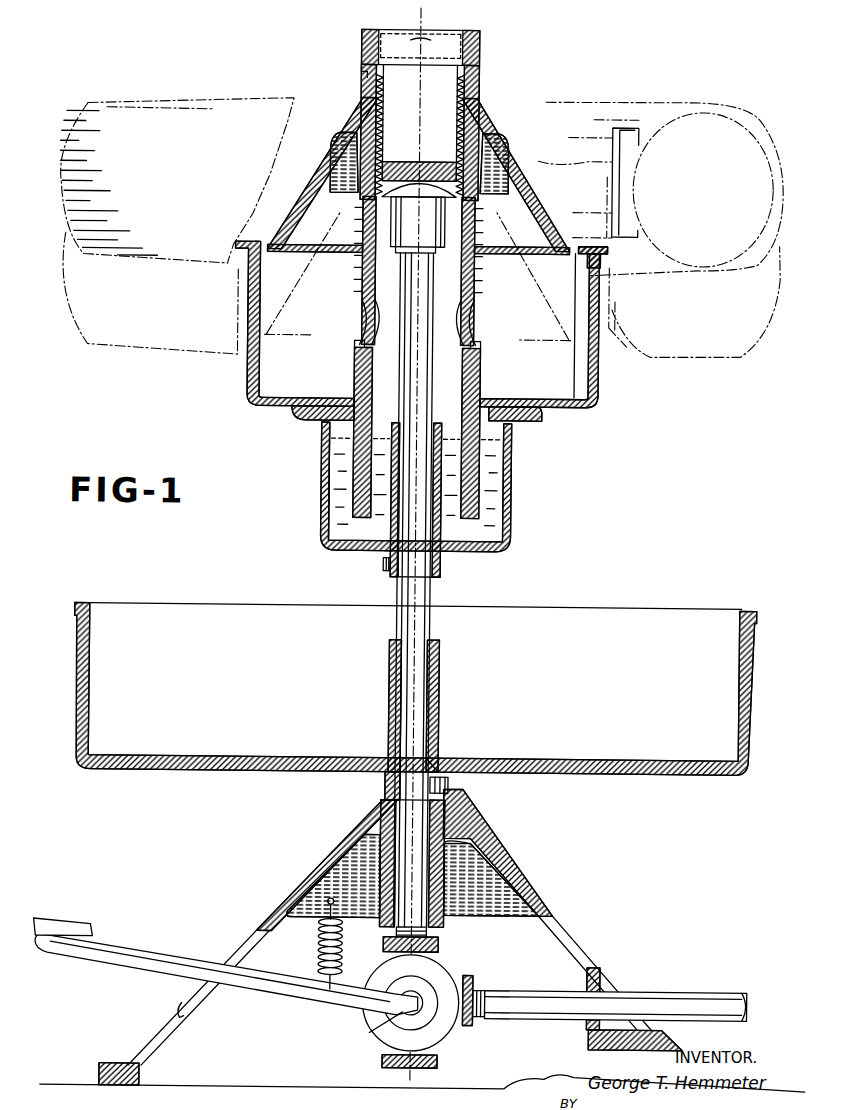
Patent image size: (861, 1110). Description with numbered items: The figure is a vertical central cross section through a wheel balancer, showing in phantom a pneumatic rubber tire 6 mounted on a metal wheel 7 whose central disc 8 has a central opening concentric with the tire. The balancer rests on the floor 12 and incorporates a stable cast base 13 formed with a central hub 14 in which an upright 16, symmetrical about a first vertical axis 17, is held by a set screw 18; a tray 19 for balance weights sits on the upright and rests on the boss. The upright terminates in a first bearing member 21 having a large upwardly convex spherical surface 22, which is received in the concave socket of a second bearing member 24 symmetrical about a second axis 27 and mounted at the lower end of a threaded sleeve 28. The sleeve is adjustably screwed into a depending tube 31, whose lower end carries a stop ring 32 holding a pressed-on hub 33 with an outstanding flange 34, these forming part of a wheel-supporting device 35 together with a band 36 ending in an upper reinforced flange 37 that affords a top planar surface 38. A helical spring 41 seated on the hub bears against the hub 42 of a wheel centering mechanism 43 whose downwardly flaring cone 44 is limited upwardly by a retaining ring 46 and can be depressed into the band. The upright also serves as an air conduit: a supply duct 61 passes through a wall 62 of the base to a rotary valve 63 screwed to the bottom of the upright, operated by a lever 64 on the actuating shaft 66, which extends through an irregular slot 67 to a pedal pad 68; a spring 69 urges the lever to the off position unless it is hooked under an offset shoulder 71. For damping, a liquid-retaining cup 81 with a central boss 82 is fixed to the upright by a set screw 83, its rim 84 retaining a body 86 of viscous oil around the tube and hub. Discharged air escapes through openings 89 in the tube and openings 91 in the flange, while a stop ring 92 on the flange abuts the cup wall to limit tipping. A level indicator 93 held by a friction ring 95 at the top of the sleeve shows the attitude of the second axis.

The pneumatic rubber tire 6 is at (721, 100).
The metal wheel 7 is at (586, 158).
The central disc 8 is at (513, 140).
The floor 12 is at (84, 1087).
The base 13 is at (308, 884).
The central hub 14 is at (396, 792).
The upright 16 is at (438, 601).
The first vertical axis 17 is at (446, 758).
The set screw 18 is at (457, 789).
The tray 19 is at (631, 766).
The first bearing member 21 is at (409, 228).
The spherical surface 22 is at (415, 183).
The second bearing member 24 is at (443, 178).
The second axis 27 is at (433, 88).
The sleeve 28 is at (466, 108).
The depending tube 31 is at (478, 275).
The stop ring 32 is at (472, 522).
The hub 33 is at (480, 471).
The outstanding flange 34 is at (569, 409).
The wheel-supporting device 35 is at (576, 371).
The band 36 is at (592, 388).
The upper reinforced flange 37 is at (603, 261).
The top planar surface 38 is at (590, 240).
The helical spring 41 is at (480, 316).
The hub of wheel centering mechanism 42 is at (479, 170).
The wheel centering mechanism 43 is at (362, 97).
The cone 44 is at (332, 148).
The retaining ring 46 is at (366, 73).
The supply duct 61 is at (730, 969).
The wall 62 is at (610, 982).
The rotary valve 63 is at (457, 978).
The lever 64 is at (264, 986).
The actuating shaft 66 is at (380, 1033).
The irregular slot 67 is at (253, 946).
The pedal pad 68 is at (80, 934).
The spring 69 is at (329, 943).
The offset shoulder 71 is at (190, 1022).
The liquid-retaining cup 81 is at (521, 544).
The central boss 82 is at (396, 530).
The set screw 83 is at (389, 565).
The rim 84 is at (330, 459).
The body of viscous oil 86 is at (346, 486).
The openings 89 is at (365, 332).
The openings 91 is at (288, 401).
The stop ring 92 is at (310, 412).
The level indicator 93 is at (431, 35).
The friction ring 95 is at (481, 44).